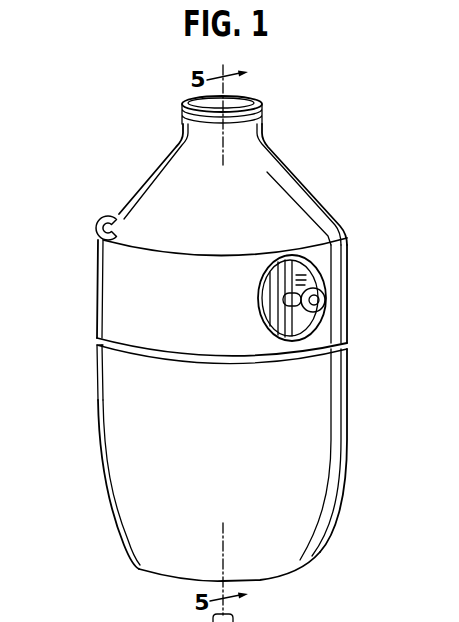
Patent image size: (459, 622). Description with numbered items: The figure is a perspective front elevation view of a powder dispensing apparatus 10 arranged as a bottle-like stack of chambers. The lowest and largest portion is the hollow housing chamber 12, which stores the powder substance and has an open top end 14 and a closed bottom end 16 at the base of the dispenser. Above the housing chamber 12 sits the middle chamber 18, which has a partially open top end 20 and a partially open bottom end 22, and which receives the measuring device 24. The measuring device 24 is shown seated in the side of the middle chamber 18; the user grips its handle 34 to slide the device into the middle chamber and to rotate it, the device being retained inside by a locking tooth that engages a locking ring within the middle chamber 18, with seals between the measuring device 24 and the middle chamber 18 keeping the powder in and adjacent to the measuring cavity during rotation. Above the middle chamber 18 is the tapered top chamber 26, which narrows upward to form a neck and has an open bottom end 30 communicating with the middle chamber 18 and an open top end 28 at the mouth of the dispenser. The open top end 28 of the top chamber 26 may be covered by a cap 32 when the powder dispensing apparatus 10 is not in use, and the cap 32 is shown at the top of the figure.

The powder dispensing apparatus 10 is at (128, 165).
The hollow housing chamber 12 is at (104, 480).
The open top end 14 is at (97, 348).
The closed bottom end 16 is at (138, 569).
The middle chamber 18 is at (98, 281).
The partially open top end 20 is at (98, 245).
The partially open bottom end 22 is at (100, 340).
The measuring device 24 is at (289, 328).
The tapered top chamber 26 is at (293, 174).
The open top end 28 is at (263, 122).
The open bottom end 30 is at (346, 236).
The cap 32 is at (261, 107).
The handle 34 is at (325, 302).